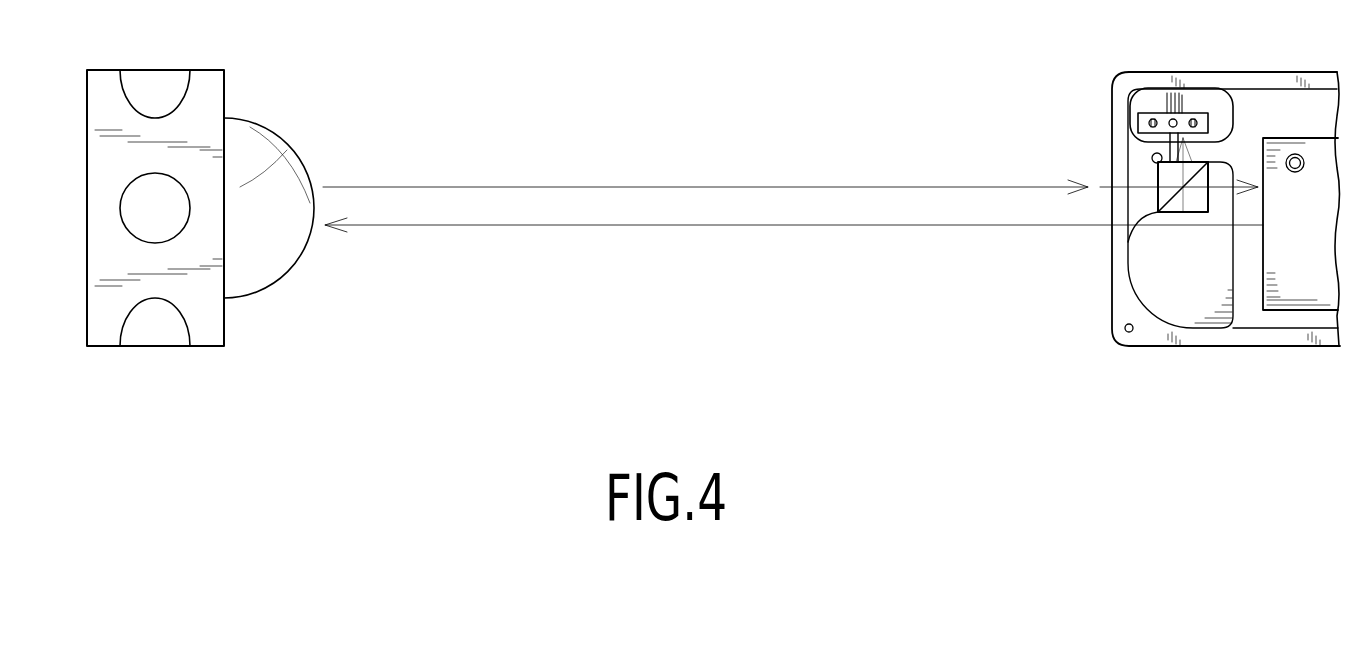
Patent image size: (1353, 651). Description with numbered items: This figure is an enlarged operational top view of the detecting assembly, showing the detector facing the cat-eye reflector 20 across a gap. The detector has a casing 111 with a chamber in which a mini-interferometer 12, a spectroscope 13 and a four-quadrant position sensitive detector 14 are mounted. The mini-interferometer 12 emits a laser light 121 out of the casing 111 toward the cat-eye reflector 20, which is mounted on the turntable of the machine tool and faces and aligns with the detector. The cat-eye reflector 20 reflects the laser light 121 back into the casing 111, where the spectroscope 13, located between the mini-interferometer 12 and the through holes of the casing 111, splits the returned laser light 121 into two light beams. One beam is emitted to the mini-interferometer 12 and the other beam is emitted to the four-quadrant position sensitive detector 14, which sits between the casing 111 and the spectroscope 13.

The cat-eye reflector 20 is at (302, 135).
The laser light 121 is at (560, 186).
The four-quadrant position sensitive detector 14 is at (1203, 100).
The spectroscope 13 is at (1168, 170).
The casing 111 is at (1168, 340).
The mini-interferometer 12 is at (1318, 292).